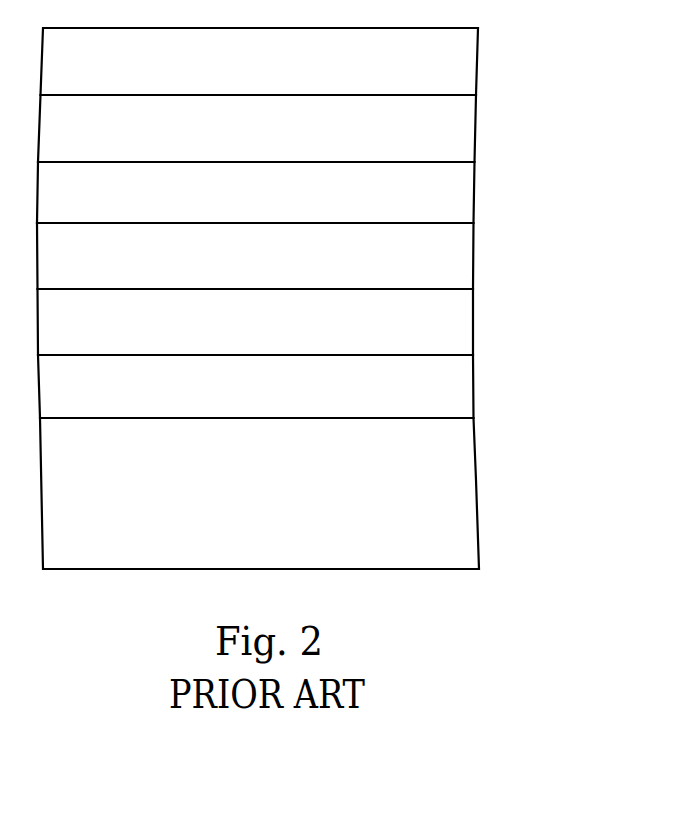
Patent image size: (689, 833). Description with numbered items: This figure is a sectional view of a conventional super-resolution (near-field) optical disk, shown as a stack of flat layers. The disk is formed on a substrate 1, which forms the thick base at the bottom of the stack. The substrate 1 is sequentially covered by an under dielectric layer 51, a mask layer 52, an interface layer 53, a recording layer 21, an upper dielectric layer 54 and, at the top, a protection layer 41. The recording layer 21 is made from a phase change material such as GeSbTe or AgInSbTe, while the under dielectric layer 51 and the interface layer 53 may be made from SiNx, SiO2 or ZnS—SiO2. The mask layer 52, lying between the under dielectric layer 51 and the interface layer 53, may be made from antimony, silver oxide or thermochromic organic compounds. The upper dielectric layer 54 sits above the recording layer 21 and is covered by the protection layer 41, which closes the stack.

The substrate 1 is at (312, 493).
The under dielectric layer 51 is at (315, 386).
The mask layer 52 is at (315, 322).
The interface layer 53 is at (314, 256).
The recording layer 21 is at (314, 192).
The upper dielectric layer 54 is at (315, 128).
The protection layer 41 is at (463, 67).